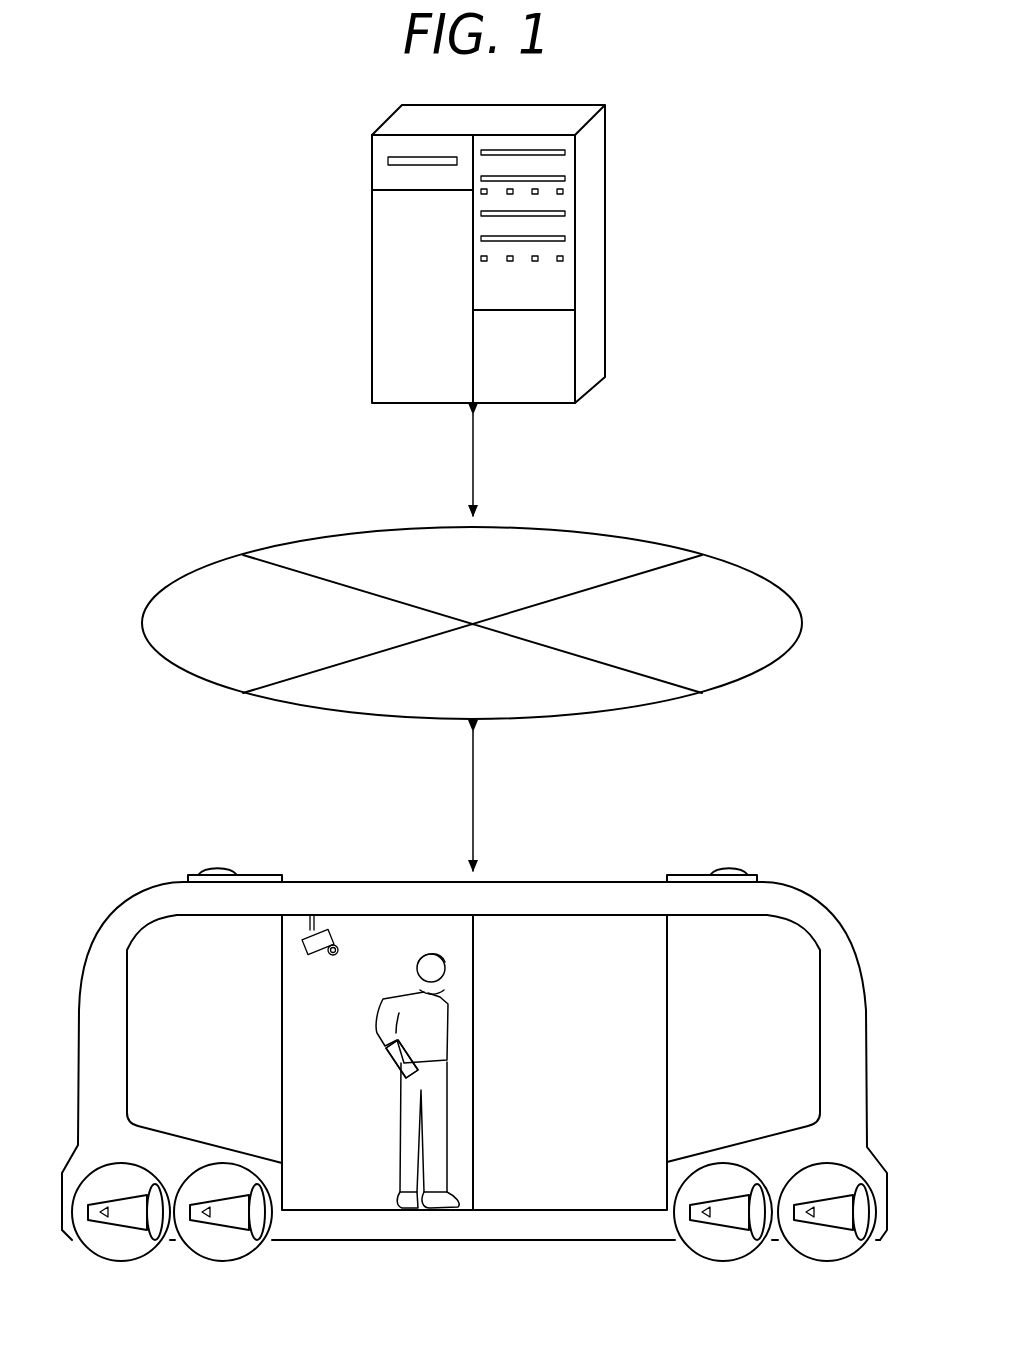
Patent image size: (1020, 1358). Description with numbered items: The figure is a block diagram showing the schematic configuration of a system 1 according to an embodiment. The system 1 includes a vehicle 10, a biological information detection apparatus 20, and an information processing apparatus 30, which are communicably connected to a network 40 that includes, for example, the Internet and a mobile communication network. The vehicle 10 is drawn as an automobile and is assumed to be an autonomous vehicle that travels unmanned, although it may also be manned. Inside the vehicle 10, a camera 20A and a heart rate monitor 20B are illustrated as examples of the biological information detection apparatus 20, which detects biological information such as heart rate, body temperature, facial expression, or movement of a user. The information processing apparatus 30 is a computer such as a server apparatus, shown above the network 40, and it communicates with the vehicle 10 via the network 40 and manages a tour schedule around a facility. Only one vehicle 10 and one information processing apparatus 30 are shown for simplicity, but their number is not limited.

The system 1 is at (787, 229).
The vehicle 10 is at (583, 882).
The biological information detection apparatus 20 is at (360, 1053).
The camera 20A is at (336, 929).
The heart rate monitor 20B is at (384, 1063).
The information processing apparatus 30 is at (372, 271).
The network 40 is at (747, 566).